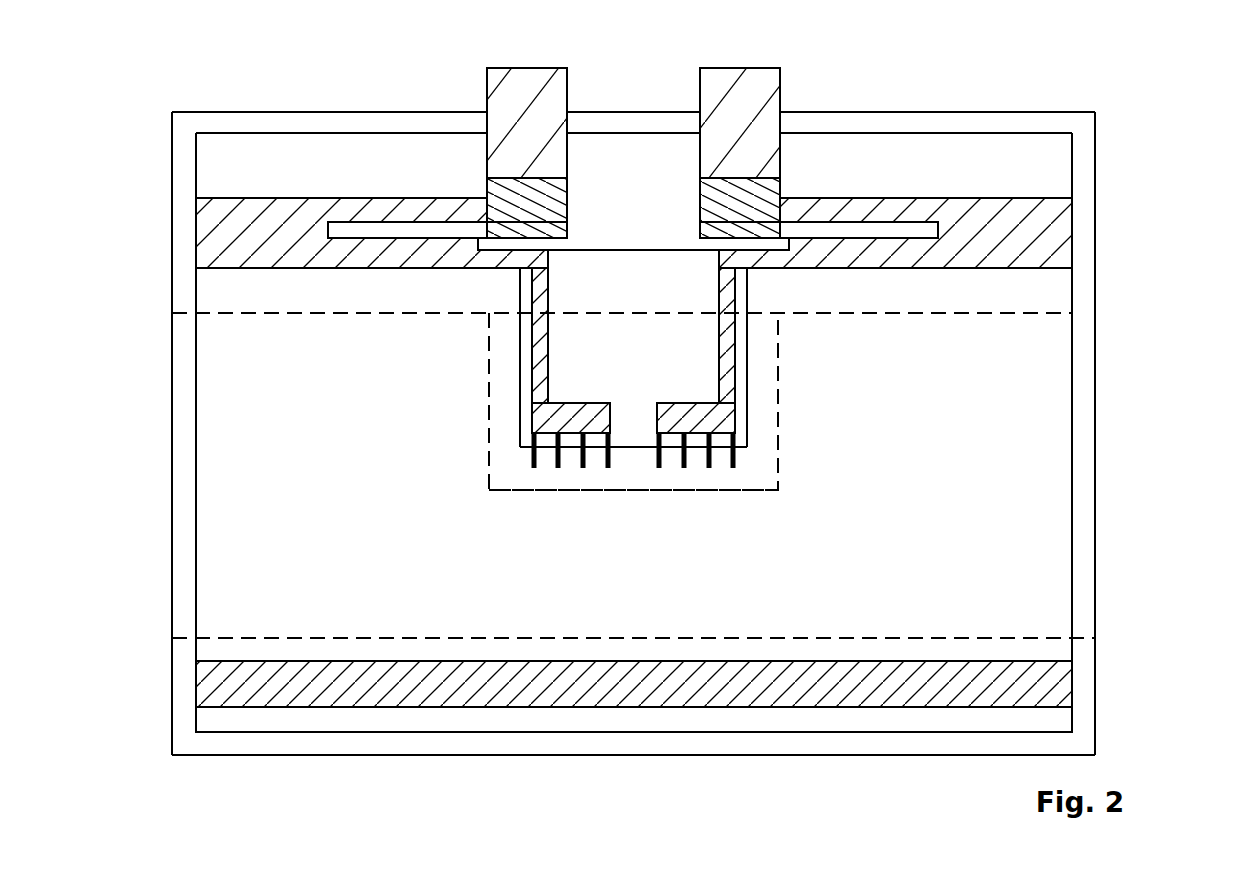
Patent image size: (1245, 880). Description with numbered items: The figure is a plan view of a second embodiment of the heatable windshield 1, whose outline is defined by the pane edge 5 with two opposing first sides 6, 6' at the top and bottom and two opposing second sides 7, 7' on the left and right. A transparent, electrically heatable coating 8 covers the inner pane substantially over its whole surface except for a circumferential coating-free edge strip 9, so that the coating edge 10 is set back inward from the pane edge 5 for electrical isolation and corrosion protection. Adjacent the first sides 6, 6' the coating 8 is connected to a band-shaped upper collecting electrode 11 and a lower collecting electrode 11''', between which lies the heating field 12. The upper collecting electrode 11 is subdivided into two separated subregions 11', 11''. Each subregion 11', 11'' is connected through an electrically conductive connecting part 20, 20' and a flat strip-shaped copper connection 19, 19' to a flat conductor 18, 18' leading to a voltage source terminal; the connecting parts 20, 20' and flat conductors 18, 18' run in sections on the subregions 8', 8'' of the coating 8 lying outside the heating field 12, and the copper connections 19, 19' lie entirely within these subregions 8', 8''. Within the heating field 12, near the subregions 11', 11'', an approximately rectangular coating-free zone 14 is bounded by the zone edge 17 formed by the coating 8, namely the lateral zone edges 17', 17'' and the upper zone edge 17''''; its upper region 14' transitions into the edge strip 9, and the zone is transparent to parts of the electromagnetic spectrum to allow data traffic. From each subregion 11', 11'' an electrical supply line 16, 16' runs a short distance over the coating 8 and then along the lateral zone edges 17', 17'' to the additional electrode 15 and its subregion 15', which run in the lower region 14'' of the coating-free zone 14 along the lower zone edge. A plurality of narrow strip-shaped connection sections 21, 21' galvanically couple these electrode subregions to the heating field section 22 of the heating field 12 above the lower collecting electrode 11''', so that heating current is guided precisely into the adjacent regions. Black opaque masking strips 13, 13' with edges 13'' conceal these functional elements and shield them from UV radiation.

The windshield 1 is at (1134, 110).
The pane edge 5 is at (172, 550).
The first side 6 is at (633, 64).
The first side 6' is at (633, 788).
The second side 7 is at (129, 433).
The second side 7' is at (1132, 433).
The coating 8 is at (696, 432).
The subregion of the coating 8' is at (341, 94).
The subregion of the coating 8'' is at (926, 91).
The coating-free edge strip 9 is at (1082, 560).
The coating edge 10 is at (1073, 521).
The collecting electrode 11 is at (306, 233).
The subregion of the collecting electrode 11' is at (306, 233).
The subregion of the collecting electrode 11'' is at (952, 233).
The collecting electrode 11''' is at (694, 684).
The heating field 12 is at (960, 487).
The masking strip 13 is at (637, 408).
The masking strip 13' is at (586, 658).
The edge of the masking strip 13'' is at (598, 475).
The coating-free zone 14 is at (412, 335).
The upper region of the coating-free zone 14' is at (633, 144).
The lower region of the coating-free zone 14'' is at (633, 621).
The additional electrode 15 is at (337, 447).
The subregion of the additional electrode 15' is at (933, 421).
The electrical supply line 16 is at (327, 340).
The electrical supply line 16' is at (946, 335).
The zone edge 17 is at (298, 359).
The lateral zone edge 17' is at (298, 359).
The lateral zone edge 17'' is at (959, 357).
The upper zone edge 17'''' is at (633, 419).
The flat conductor 18 is at (527, 97).
The flat conductor 18' is at (740, 97).
The copper connection 19 is at (503, 127).
The copper connection 19' is at (764, 127).
The connecting part 20 is at (447, 127).
The connecting part 20' is at (819, 127).
The connection section 21 is at (571, 627).
The connection section 21' is at (711, 627).
The heating field section 22 is at (672, 557).